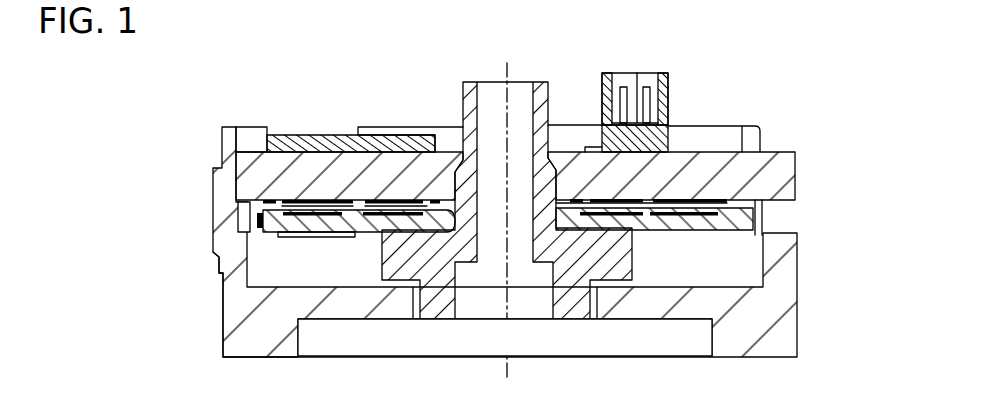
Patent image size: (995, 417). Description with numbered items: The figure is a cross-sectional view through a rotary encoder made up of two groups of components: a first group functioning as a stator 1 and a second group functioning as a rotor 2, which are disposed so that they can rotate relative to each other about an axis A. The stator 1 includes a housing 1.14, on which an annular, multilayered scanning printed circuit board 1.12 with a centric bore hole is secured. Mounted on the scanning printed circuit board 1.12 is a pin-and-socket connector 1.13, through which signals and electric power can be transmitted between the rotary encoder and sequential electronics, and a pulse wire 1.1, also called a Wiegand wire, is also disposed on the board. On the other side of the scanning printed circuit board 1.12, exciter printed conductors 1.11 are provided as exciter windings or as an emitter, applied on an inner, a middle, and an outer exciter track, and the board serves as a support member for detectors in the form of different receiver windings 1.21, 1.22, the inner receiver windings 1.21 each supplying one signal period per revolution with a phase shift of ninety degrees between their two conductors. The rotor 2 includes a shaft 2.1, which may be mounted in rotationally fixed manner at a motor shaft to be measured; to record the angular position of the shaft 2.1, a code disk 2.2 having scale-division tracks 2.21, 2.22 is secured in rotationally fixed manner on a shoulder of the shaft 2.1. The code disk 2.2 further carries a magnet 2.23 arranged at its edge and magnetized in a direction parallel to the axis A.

The stator 1 is at (777, 315).
The pulse wire 1.1 is at (240, 207).
The exciter printed conductors 1.11 is at (345, 200).
The scanning printed circuit board 1.12 is at (780, 175).
The pin-and-socket connector 1.13 is at (668, 80).
The housing 1.14 is at (230, 323).
The inner receiver windings 1.21 is at (391, 197).
The receiver windings 1.22 is at (307, 200).
The rotor 2 is at (507, 225).
The shaft 2.1 is at (570, 322).
The code disk 2.2 is at (742, 215).
The scale-division track 2.21 is at (632, 215).
The scale-division track 2.22 is at (690, 216).
The magnet 2.23 is at (250, 232).
The axis A is at (507, 63).